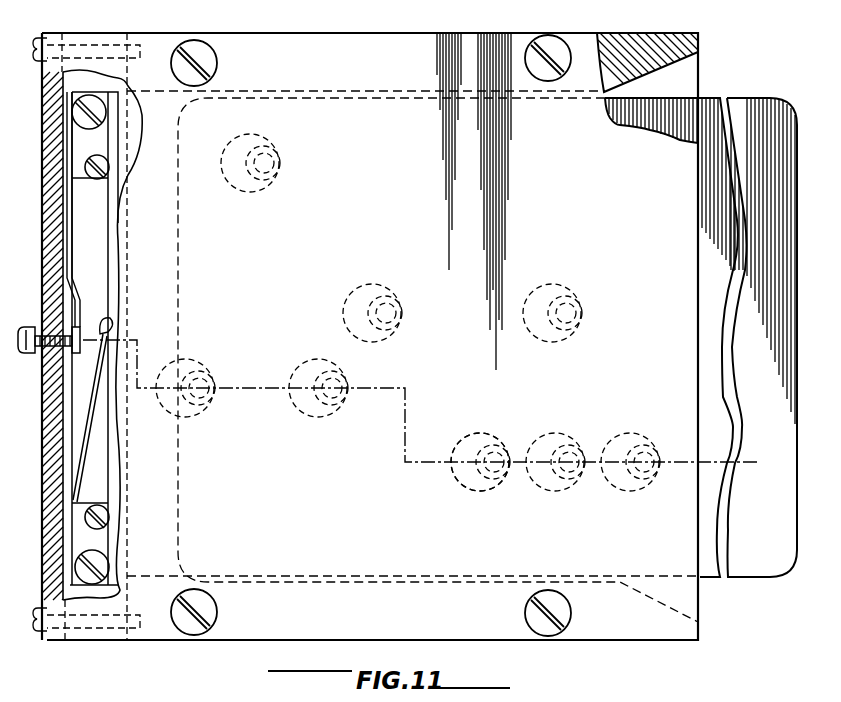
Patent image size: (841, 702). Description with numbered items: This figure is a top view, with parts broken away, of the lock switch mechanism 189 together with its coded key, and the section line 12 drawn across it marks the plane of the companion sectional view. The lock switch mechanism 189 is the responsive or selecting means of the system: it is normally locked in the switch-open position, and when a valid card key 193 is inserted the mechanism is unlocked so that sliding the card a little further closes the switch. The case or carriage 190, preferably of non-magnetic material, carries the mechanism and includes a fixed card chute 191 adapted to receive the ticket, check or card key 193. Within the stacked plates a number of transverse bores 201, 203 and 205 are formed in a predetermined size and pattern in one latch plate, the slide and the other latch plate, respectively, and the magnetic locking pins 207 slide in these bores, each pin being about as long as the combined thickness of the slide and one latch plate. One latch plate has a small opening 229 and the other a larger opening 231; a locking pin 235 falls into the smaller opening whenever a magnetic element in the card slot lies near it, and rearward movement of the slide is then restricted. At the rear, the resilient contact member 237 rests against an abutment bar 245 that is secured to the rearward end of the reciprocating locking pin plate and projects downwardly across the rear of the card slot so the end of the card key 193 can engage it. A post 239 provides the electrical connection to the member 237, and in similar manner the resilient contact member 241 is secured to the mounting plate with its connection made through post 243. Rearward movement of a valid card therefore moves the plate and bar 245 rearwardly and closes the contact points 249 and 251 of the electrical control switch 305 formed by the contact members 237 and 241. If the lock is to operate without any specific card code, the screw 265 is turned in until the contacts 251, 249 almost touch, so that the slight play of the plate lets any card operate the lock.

The section line 12- 12 is at (17, 362).
The lock switch mechanism 189 is at (354, 71).
The case or carriage 190 is at (416, 45).
The card chute 191 is at (690, 72).
The card key 193 is at (752, 578).
The transverse bore 201 is at (488, 444).
The transverse bore 203 is at (500, 480).
The transverse bore 205 is at (465, 445).
The magnetic locking pin 207 is at (478, 480).
The small opening 229 is at (580, 450).
The larger opening 231 is at (536, 451).
The locking pin 235 is at (582, 480).
The resilient contact member 237 is at (88, 450).
The post 239 is at (100, 570).
The resilient contact member 241 is at (78, 235).
The post 243 is at (100, 111).
The abutment bar 245 is at (117, 168).
The contact point 249 is at (103, 320).
The contact point 251 is at (81, 354).
The screw 265 is at (33, 355).
The electrical control switch 305 is at (78, 307).